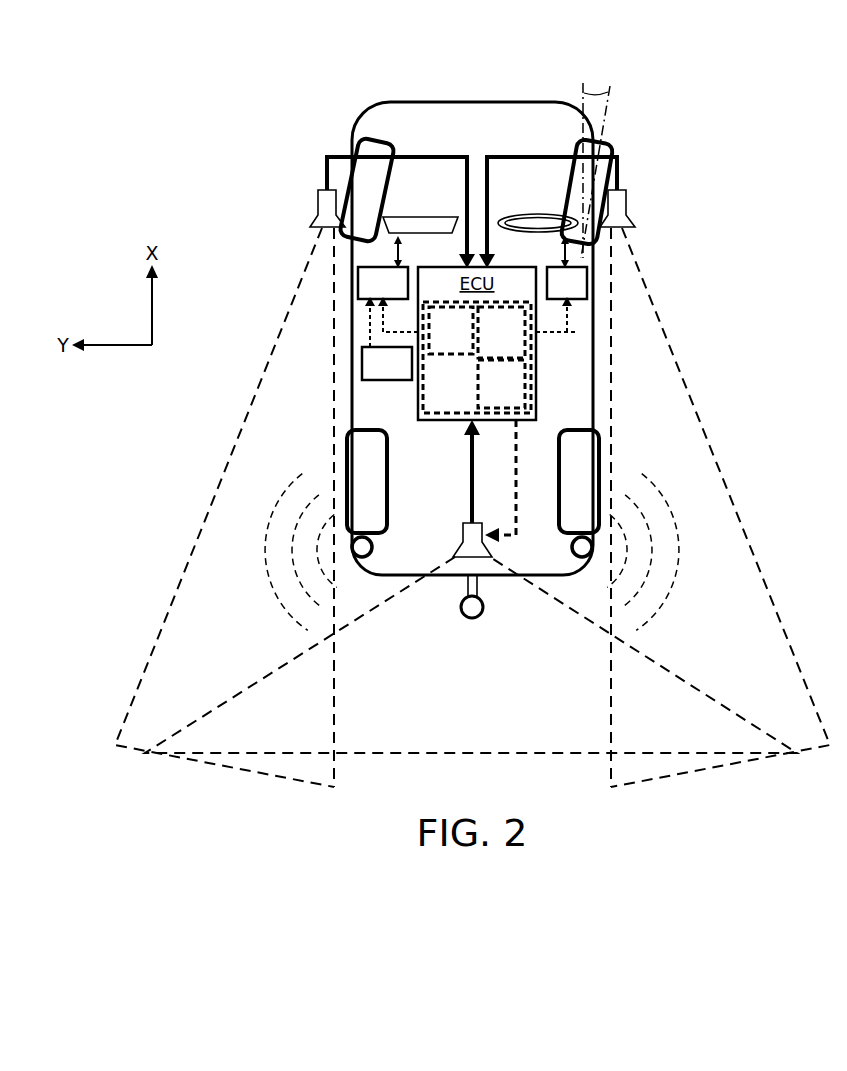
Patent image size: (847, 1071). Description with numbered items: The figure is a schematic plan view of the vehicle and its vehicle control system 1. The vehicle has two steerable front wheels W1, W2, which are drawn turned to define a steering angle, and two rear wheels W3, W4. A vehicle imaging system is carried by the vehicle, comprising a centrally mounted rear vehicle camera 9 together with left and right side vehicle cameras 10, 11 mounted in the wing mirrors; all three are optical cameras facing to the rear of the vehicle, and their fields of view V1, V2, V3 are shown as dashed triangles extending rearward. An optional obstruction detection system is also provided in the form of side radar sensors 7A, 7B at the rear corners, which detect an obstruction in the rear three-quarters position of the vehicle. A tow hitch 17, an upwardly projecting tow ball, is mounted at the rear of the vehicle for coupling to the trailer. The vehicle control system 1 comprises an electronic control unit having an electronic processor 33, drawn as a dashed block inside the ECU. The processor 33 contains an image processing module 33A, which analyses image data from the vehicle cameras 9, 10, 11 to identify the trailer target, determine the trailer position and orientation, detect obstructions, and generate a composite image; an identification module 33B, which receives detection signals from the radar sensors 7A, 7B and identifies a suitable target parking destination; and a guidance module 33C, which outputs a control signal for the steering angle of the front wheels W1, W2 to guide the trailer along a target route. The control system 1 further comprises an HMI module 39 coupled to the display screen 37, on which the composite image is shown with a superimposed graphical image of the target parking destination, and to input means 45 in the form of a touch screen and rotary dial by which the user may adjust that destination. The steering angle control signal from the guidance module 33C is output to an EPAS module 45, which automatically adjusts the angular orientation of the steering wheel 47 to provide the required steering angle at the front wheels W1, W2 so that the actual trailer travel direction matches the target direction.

The vehicle control system 1 is at (582, 329).
The side radar sensor 7A is at (593, 545).
The side radar sensor 7B is at (352, 545).
The rear vehicle camera 9 is at (484, 556).
The left side vehicle camera 10 is at (329, 200).
The right side vehicle camera 11 is at (619, 200).
The tow hitch 17 is at (466, 612).
The electronic processor 33 is at (584, 357).
The image processing module 33A is at (451, 330).
The identification module 33B is at (501, 332).
The guidance module 33C is at (501, 384).
The display screen 37 is at (435, 222).
The HMI module 39 is at (383, 283).
The input means / EPAS module 45 is at (474, 323).
The steering wheel 47 is at (526, 216).
The front wheel W1 is at (367, 143).
The front wheel W2 is at (600, 150).
The rear wheel W3 is at (367, 482).
The rear wheel W4 is at (578, 482).
The field of view V1 is at (471, 655).
The field of view V2 is at (226, 507).
The field of view V3 is at (718, 507).